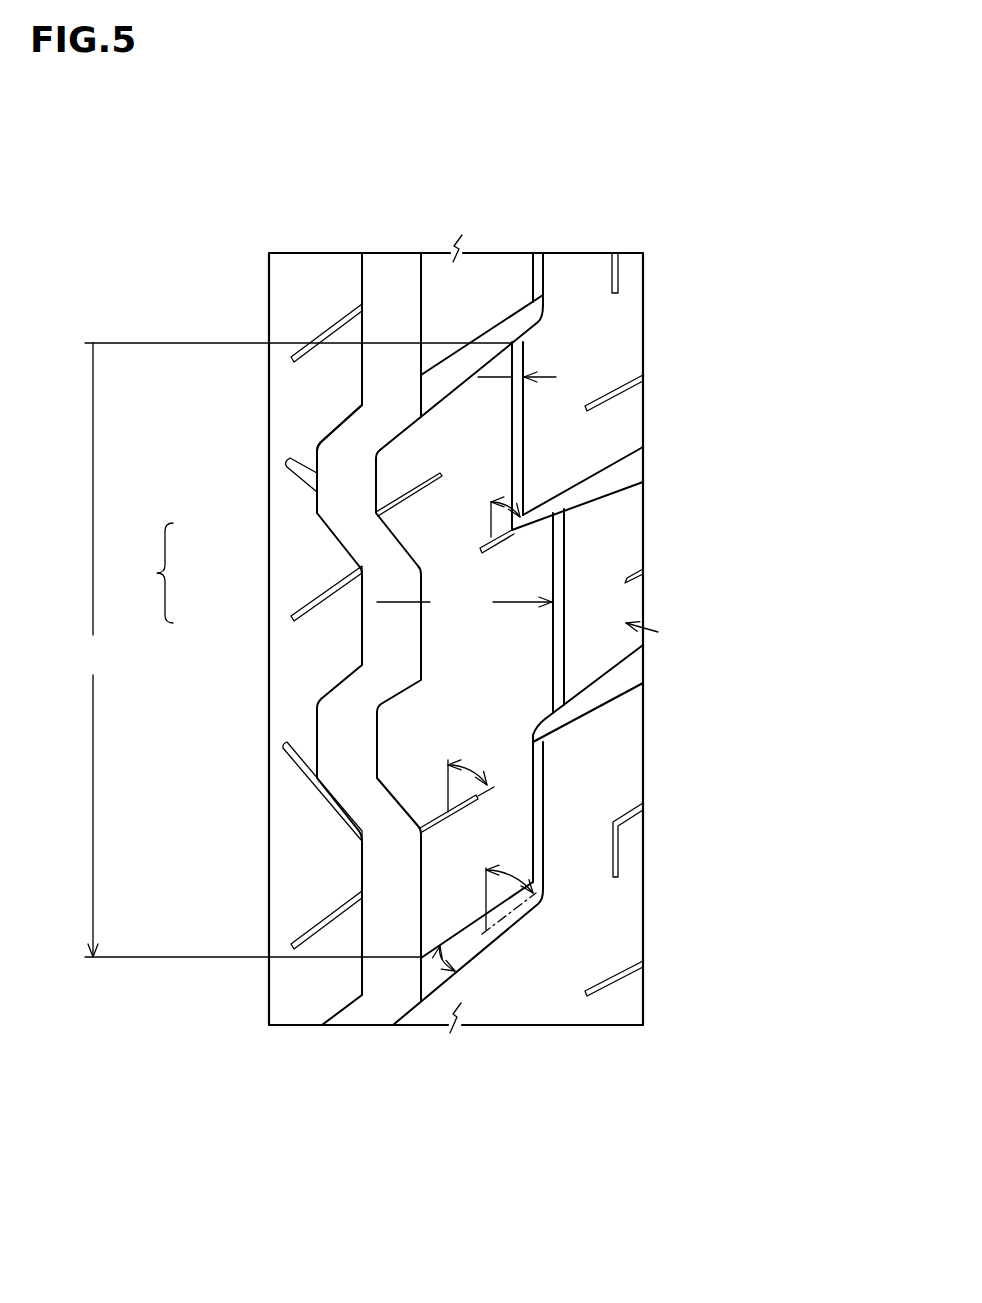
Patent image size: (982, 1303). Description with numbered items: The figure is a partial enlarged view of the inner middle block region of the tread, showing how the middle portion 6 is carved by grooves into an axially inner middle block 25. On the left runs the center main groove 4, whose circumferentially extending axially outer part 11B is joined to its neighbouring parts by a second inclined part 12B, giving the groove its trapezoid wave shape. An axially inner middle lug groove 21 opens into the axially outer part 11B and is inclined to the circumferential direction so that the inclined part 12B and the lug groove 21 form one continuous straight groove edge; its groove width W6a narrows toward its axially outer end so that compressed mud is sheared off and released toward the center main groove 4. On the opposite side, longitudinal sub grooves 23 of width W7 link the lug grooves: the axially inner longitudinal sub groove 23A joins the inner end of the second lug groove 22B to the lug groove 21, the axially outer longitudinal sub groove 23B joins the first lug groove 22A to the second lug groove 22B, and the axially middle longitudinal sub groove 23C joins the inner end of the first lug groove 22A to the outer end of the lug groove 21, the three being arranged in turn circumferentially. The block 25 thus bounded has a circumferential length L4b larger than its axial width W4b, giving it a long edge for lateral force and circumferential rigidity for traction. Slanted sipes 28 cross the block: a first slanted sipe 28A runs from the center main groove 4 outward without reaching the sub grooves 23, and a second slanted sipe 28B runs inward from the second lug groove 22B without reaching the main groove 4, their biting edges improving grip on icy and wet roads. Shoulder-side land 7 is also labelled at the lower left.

The center main groove 4 is at (383, 282).
The axially outer part 11B is at (421, 300).
The second inclined part 12B is at (360, 433).
The axially inner middle lug groove 21 is at (510, 330).
The longitudinal sub groove 23 is at (669, 601).
The axially inner longitudinal sub groove 23A is at (518, 443).
The axially outer longitudinal sub groove 23B is at (563, 643).
The axially middle longitudinal sub groove 23C is at (542, 808).
The first lug groove 22A is at (610, 690).
The second lug groove 22B is at (607, 487).
The axially inner middle block 25 is at (408, 743).
The slanted sipe 28 is at (308, 683).
The first slanted sipe 28A is at (440, 475).
The second slanted sipe 28B is at (362, 566).
The middle portion 6 is at (606, 953).
The shoulder land portion 7 is at (300, 995).
The groove width of longitudinal sub groove W7 is at (518, 360).
The groove width of axially inner middle lug groove W6a is at (418, 392).
The axial width of axially inner middle block W4b is at (464, 602).
The circumferential length of axially inner middle block L4b is at (291, 650).